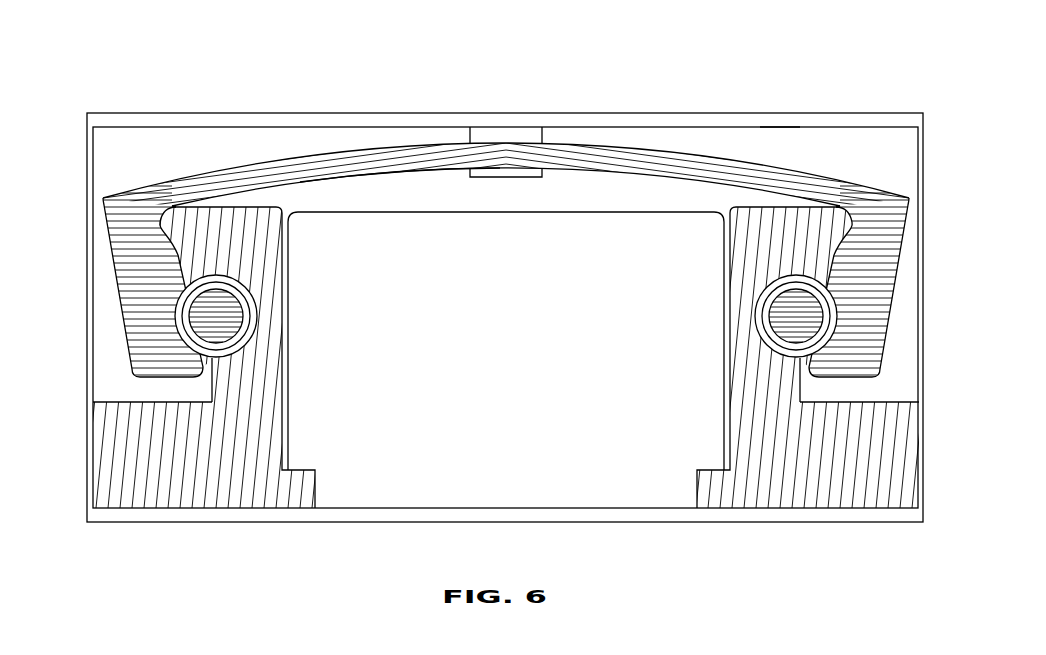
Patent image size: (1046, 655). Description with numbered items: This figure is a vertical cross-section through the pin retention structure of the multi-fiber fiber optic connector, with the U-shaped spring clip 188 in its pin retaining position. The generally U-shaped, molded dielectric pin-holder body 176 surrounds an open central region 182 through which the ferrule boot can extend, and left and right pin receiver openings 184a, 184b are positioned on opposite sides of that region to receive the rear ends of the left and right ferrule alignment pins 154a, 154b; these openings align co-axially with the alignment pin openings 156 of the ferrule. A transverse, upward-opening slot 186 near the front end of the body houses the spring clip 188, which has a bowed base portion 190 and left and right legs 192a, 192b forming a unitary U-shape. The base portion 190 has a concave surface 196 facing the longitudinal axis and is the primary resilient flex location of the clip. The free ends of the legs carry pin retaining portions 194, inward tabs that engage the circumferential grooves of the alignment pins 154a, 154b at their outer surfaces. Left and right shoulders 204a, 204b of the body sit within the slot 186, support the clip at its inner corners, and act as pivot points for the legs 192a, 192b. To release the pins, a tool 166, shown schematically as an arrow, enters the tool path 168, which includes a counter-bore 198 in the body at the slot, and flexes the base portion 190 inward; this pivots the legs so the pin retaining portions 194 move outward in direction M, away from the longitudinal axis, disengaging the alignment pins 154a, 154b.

The alignment pin openings 156 is at (856, 64).
The tool 166 is at (508, 130).
The tool path 168 is at (484, 130).
The pin-holder body 176 is at (142, 507).
The open central region 182 is at (608, 485).
The left pin receiver opening 184a is at (748, 295).
The right pin receiver opening 184b is at (262, 290).
The slot 186 is at (782, 133).
The U-shaped spring clip 188 is at (260, 170).
The base portion 190 is at (677, 160).
The left leg 192a is at (893, 247).
The right leg 192b is at (122, 247).
The pin retaining portions 194 is at (205, 358).
The concave surface 196 is at (399, 181).
The counter-bore 198 is at (534, 130).
The left ferrule alignment pin 154a is at (775, 328).
The right ferrule alignment pin 154b is at (233, 322).
The left shoulder 204a is at (840, 217).
The right shoulder 204b is at (182, 217).
The movement M is at (78, 347).